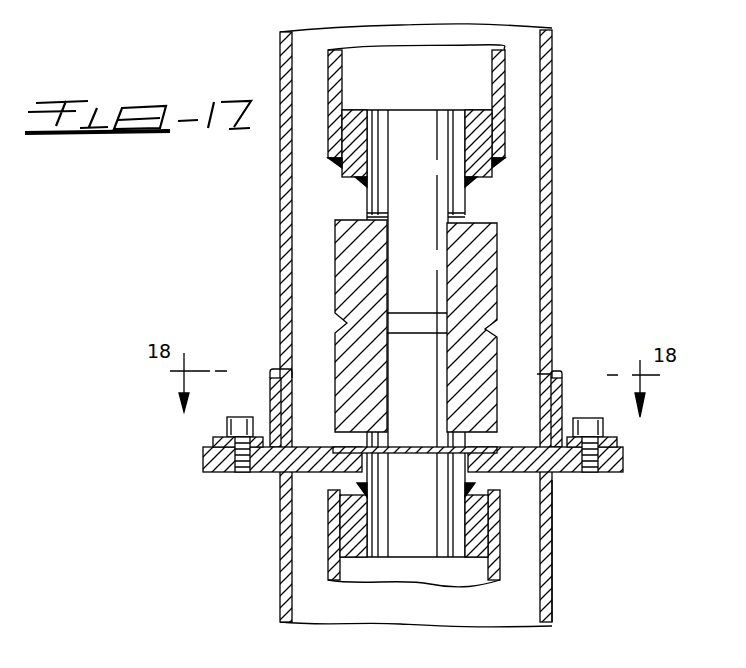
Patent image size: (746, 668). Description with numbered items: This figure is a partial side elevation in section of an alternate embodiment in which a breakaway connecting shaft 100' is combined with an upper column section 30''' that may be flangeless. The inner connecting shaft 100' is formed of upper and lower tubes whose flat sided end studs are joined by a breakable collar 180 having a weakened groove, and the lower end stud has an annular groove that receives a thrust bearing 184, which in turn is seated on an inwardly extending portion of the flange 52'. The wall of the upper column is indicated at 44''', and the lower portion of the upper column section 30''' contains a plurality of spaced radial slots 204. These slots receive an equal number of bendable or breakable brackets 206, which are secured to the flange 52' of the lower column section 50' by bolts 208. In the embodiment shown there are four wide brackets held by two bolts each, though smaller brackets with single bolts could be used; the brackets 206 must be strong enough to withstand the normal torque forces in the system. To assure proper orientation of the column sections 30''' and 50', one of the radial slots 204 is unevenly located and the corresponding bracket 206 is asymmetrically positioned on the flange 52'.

The upper column section 30''' is at (244, 327).
The housing tube wall 44''' is at (583, 326).
The lower column section 50' is at (580, 551).
The lower flange 52' is at (437, 470).
The breakaway connecting shaft 100' is at (366, 535).
The breakable collar 180 is at (490, 294).
The thrust bearing 184 is at (480, 447).
The radial slots 204 is at (284, 368).
The brackets 206 is at (270, 395).
The bolts 208 is at (228, 425).